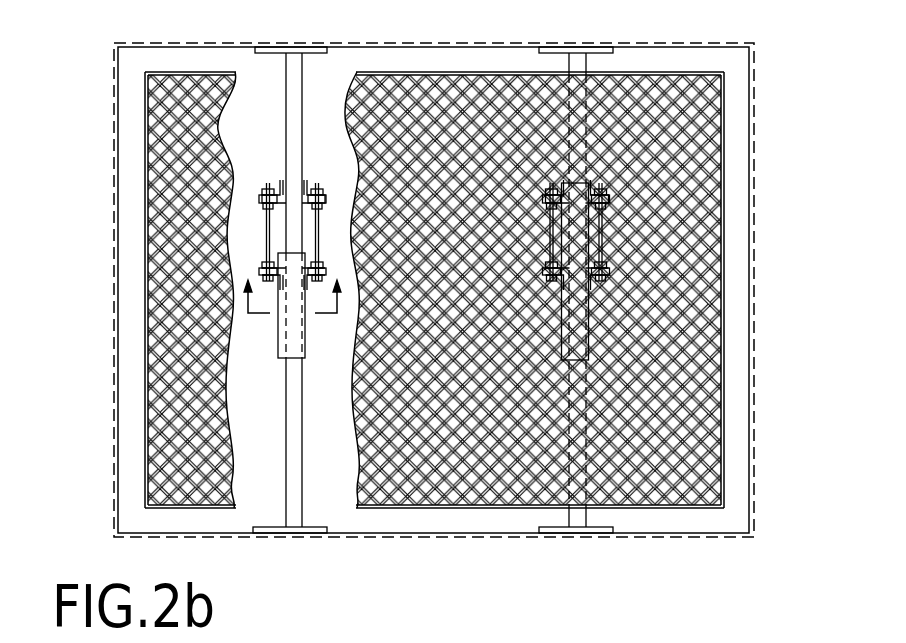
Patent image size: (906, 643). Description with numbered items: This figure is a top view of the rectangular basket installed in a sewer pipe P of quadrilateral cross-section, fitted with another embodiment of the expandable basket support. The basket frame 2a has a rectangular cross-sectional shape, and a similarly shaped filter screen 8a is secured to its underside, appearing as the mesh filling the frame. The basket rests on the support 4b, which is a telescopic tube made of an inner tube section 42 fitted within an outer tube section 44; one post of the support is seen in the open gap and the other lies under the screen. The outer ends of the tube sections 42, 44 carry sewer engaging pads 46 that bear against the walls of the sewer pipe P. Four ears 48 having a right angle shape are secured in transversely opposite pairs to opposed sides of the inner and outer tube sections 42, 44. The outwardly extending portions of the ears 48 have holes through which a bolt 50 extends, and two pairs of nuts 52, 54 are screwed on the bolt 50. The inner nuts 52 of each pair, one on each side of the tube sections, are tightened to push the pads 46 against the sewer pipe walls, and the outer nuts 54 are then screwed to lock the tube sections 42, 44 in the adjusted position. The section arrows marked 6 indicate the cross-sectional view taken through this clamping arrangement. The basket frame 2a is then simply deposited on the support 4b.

The sewer pipe P is at (753, 268).
The basket frame 2a is at (725, 403).
The expandable basket support 4b is at (310, 470).
The FIG. 6 section line 6 is at (292, 313).
The filter screen 8a is at (703, 472).
The inner tube section 42 is at (285, 104).
The outer tube section 44 is at (303, 436).
The sewer engaging pads 46 is at (328, 52).
The ears 48 is at (322, 197).
The bolt 50 is at (263, 246).
The inner nuts 52 is at (262, 202).
The outer nuts 54 is at (262, 193).